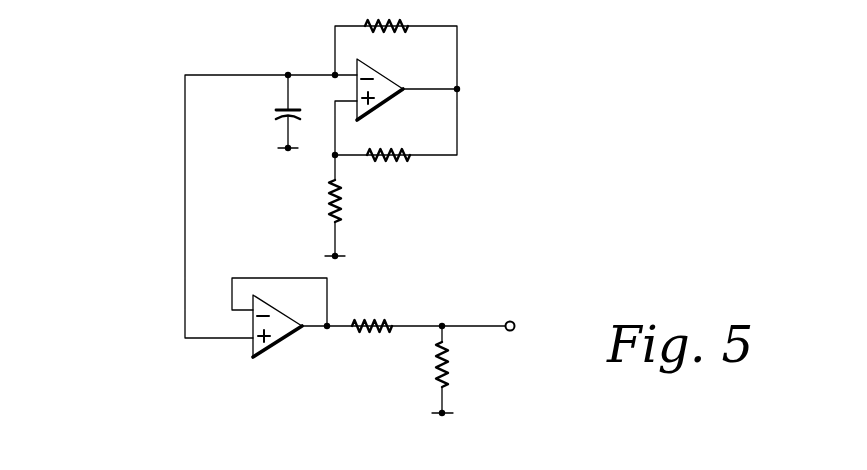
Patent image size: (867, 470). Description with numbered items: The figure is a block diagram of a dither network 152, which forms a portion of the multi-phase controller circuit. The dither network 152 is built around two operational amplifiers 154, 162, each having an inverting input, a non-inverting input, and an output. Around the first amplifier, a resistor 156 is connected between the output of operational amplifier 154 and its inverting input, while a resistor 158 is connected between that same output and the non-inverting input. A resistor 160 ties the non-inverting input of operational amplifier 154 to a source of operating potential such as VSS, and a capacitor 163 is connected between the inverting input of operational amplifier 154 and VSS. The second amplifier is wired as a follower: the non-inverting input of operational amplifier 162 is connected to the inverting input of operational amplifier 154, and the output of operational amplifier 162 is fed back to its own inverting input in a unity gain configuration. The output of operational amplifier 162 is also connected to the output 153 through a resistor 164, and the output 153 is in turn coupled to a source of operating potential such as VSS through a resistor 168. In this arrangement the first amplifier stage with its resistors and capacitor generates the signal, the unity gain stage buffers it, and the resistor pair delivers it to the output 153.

The dither network 152 is at (638, 237).
The output 153 is at (513, 320).
The operational amplifier 154 is at (386, 108).
The resistor 156 is at (402, 31).
The resistor 158 is at (400, 160).
The resistor 160 is at (340, 206).
The operational amplifier 162 is at (283, 343).
The capacitor 163 is at (280, 105).
The resistor 164 is at (378, 320).
The resistor 168 is at (448, 370).